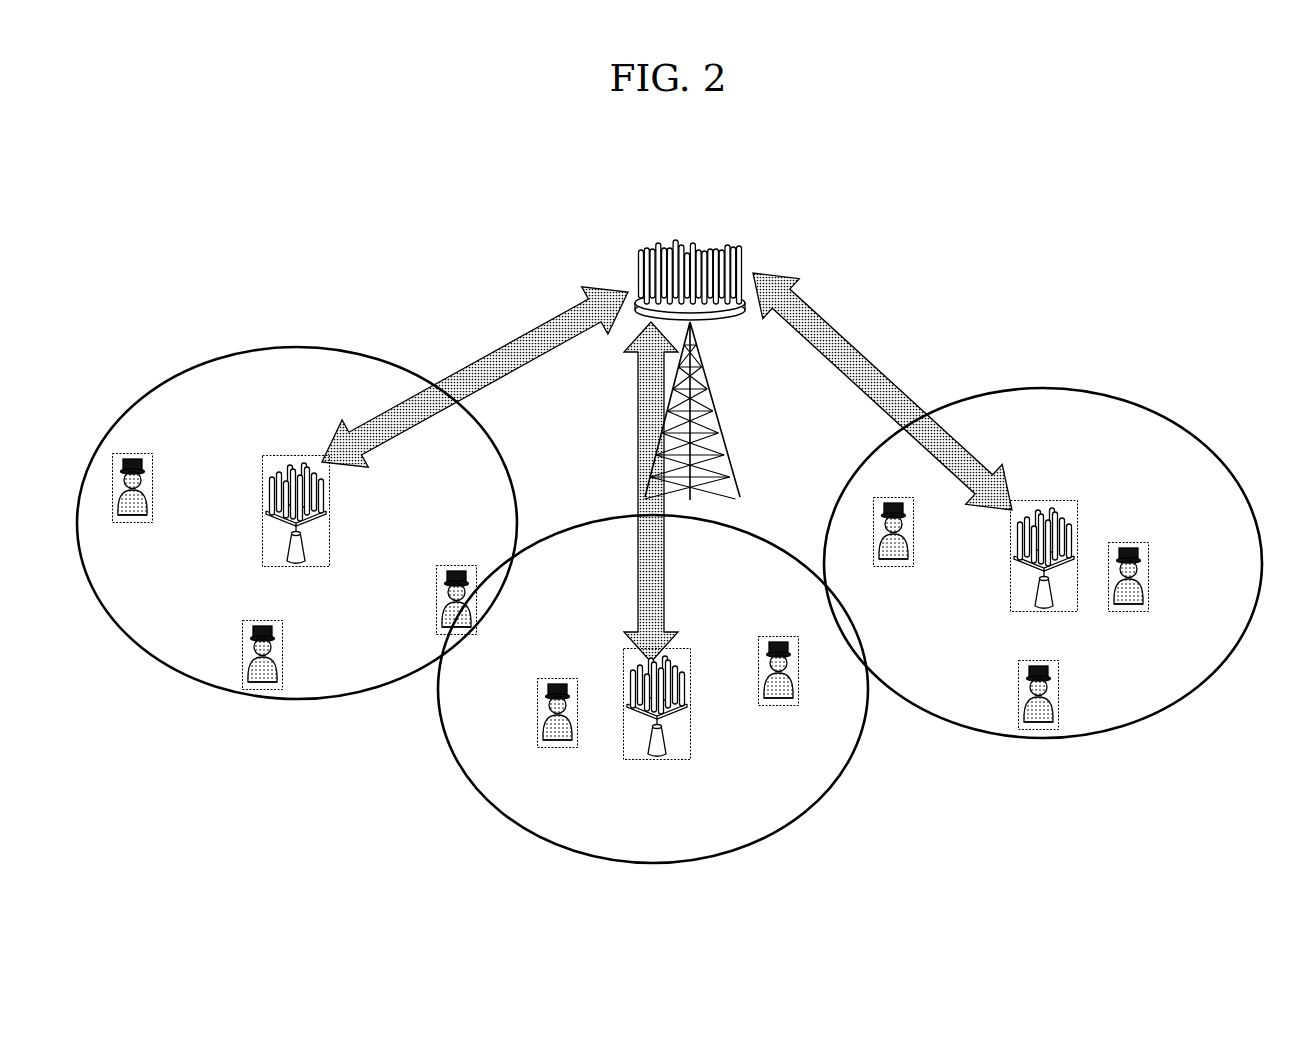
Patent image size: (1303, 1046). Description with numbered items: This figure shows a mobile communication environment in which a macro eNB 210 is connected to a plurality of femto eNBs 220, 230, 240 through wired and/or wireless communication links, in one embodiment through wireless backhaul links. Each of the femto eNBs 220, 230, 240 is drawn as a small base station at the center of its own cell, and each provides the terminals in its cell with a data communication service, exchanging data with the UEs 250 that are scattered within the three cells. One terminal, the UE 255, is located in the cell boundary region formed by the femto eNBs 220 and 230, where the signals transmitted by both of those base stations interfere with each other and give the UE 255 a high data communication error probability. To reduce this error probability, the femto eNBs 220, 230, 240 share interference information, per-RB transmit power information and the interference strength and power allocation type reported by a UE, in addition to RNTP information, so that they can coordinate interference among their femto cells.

The macro eNB 210 is at (700, 240).
The femto eNB 220 is at (330, 508).
The femto eNB 230 is at (692, 735).
The femto eNB 240 is at (1078, 503).
The UEs 250 is at (537, 747).
The UE 255 is at (457, 563).